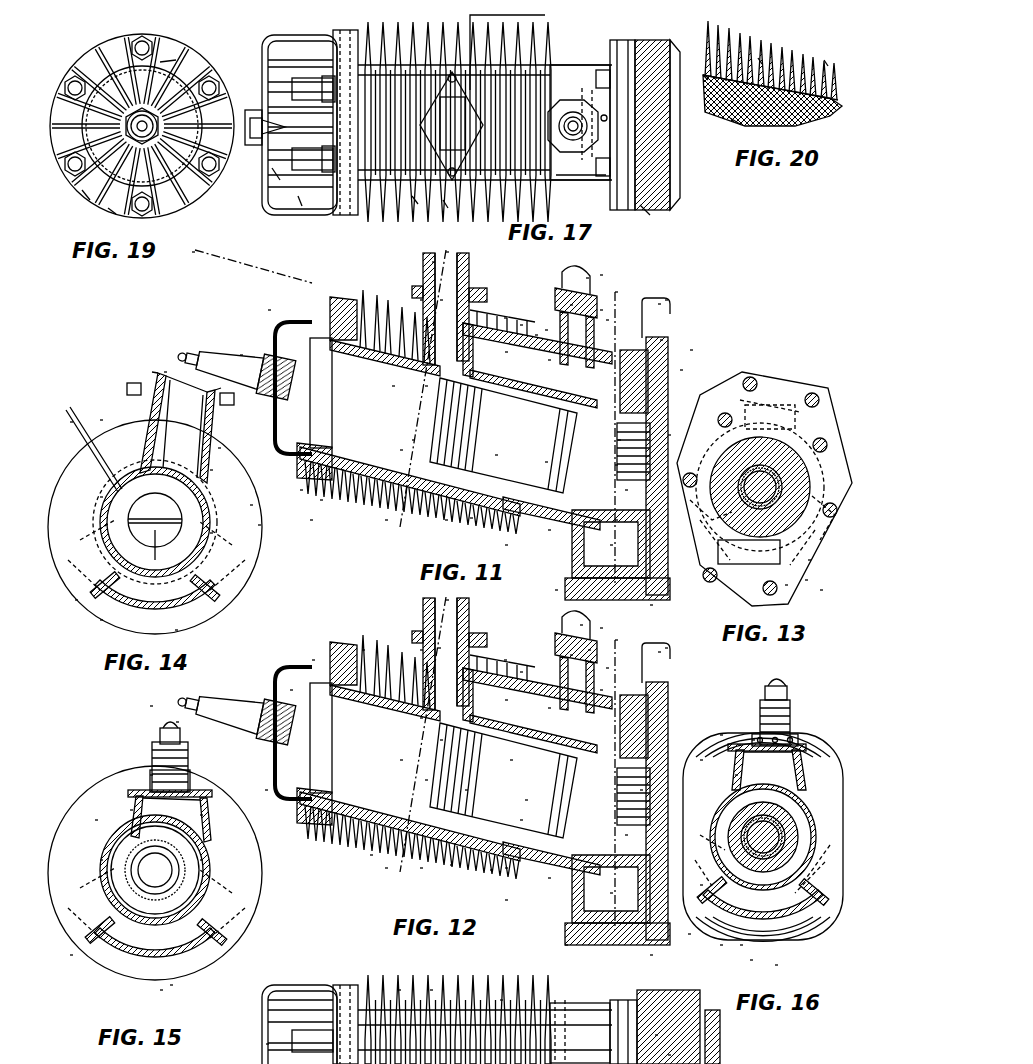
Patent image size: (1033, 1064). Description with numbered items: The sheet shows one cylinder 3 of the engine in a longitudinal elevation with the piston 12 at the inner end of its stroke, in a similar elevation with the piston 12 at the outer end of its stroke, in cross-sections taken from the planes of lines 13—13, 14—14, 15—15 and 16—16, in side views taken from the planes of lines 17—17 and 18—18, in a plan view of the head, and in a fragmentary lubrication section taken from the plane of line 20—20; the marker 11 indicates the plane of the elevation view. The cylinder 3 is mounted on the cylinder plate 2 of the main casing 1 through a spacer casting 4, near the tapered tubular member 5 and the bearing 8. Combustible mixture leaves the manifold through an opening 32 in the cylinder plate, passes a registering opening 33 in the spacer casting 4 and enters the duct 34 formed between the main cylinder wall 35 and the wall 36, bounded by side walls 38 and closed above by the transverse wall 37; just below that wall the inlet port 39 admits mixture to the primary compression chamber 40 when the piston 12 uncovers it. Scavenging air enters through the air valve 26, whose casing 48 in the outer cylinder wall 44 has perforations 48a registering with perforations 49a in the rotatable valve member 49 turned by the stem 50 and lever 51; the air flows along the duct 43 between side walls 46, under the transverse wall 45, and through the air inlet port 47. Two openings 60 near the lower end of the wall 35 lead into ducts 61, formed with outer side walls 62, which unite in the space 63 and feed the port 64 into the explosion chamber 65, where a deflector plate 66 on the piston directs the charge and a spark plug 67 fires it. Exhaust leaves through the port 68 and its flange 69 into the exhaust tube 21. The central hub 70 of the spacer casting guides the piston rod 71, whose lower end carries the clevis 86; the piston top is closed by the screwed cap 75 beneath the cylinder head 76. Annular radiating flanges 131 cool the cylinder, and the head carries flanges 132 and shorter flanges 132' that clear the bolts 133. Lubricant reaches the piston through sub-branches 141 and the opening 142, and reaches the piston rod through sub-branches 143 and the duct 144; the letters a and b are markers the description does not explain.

In FIG. 11, the main casing 1 is at (690, 350).
In FIG. 17, the cylinder plate 2 is at (680, 188).
In FIG. 11, the cylinder plate 2 is at (680, 370).
In FIG. 17, the cylinder 3 is at (380, 224).
In FIG. 20, the cylinder 3 is at (804, 50).
In FIG. 11, the cylinder 3 is at (310, 520).
In FIG. 12, the cylinder 3 is at (362, 650).
In FIG. 13, the cylinder 3 is at (776, 372).
In FIG. 14, the cylinder 3 is at (255, 548).
In FIG. 15, the cylinder 3 is at (246, 886).
In FIG. 16, the cylinder 3 is at (815, 822).
In FIG. 18, the cylinder 3 is at (376, 986).
In FIG. 17, the spacer casting 4 is at (648, 212).
In FIG. 11, the spacer casting 4 is at (666, 300).
In FIG. 12, the spacer casting 4 is at (658, 653).
In FIG. 18, the spacer casting 4 is at (640, 998).
In FIG. 11, the tapered tubular member 5 is at (555, 590).
In FIG. 12, the tapered tubular member 5 is at (565, 945).
In FIG. 11, the bearing 8 is at (650, 605).
In FIG. 12, the bearing 8 is at (656, 962).
In FIG. 14, the section line 11— 11 is at (160, 370).
In FIG. 20, the piston 12 is at (732, 122).
In FIG. 11, the piston 12 is at (286, 497).
In FIG. 12, the piston 12 is at (392, 752).
In FIG. 14, the piston 12 is at (250, 505).
In FIG. 15, the piston 12 is at (176, 722).
In FIG. 11, the section line 13— 13 is at (600, 312).
In FIG. 11, the section line 14— 14 is at (466, 257).
In FIG. 12, the section line 15— 15 is at (496, 660).
In FIG. 12, the section line 16— 16 is at (612, 640).
In FIG. 11, the section line 17— 17 is at (190, 248).
In FIG. 12, the section line 18— 18 is at (690, 920).
In FIG. 15, the section line 18— 18 is at (151, 698).
In FIG. 14, the section line 20— 20 is at (72, 422).
In FIG. 11, the exhaust tube 21 is at (434, 262).
In FIG. 14, the exhaust tube 21 is at (152, 373).
In FIG. 17, the air valve 26 is at (640, 104).
In FIG. 11, the air valve 26 is at (600, 310).
In FIG. 12, the air valve 26 is at (600, 690).
In FIG. 15, the air valve 26 is at (190, 776).
In FIG. 16, the air valve 26 is at (762, 716).
In FIG. 11, the opening 32 is at (615, 520).
In FIG. 12, the opening 32 is at (615, 868).
In FIG. 18, the opening 32 is at (668, 1058).
In FIG. 11, the opening 33 is at (610, 545).
In FIG. 12, the opening 33 is at (610, 893).
In FIG. 18, the opening 33 is at (658, 1040).
In FIG. 11, the duct 34 is at (548, 530).
In FIG. 12, the duct 34 is at (548, 878).
In FIG. 13, the duct 34 is at (745, 565).
In FIG. 15, the duct 34 is at (156, 985).
In FIG. 16, the duct 34 is at (766, 945).
In FIG. 20, the main cylinder wall 35 is at (704, 76).
In FIG. 11, the main cylinder wall 35 is at (320, 500).
In FIG. 12, the main cylinder wall 35 is at (505, 868).
In FIG. 13, the main cylinder wall 35 is at (810, 560).
In FIG. 14, the main cylinder wall 35 is at (258, 525).
In FIG. 15, the main cylinder wall 35 is at (96, 822).
In FIG. 16, the main cylinder wall 35 is at (742, 945).
In FIG. 11, the wall 36 is at (505, 545).
In FIG. 12, the wall 36 is at (505, 900).
In FIG. 13, the wall 36 is at (785, 585).
In FIG. 15, the wall 36 is at (172, 985).
In FIG. 16, the wall 36 is at (752, 960).
In FIG. 11, the transverse wall 37 is at (445, 520).
In FIG. 12, the transverse wall 37 is at (420, 868).
In FIG. 14, the transverse wall 37 is at (176, 630).
In FIG. 18, the transverse wall 37 is at (432, 990).
In FIG. 13, the side walls 38 is at (805, 580).
In FIG. 14, the side walls 38 is at (78, 600).
In FIG. 15, the side walls 38 is at (72, 955).
In FIG. 16, the side walls 38 is at (722, 946).
In FIG. 18, the side walls 38 is at (566, 1002).
In FIG. 11, the combustible mixture inlet port 39 is at (470, 518).
In FIG. 12, the combustible mixture inlet port 39 is at (450, 865).
In FIG. 15, the combustible mixture inlet port 39 is at (162, 992).
In FIG. 18, the combustible mixture inlet port 39 is at (500, 1000).
In FIG. 11, the primary compression chamber 40 is at (618, 440).
In FIG. 12, the primary compression chamber 40 is at (490, 870).
In FIG. 15, the primary compression chamber 40 is at (250, 905).
In FIG. 16, the primary compression chamber 40 is at (722, 806).
In FIG. 17, the duct 43 is at (580, 195).
In FIG. 11, the duct 43 is at (548, 360).
In FIG. 12, the duct 43 is at (548, 708).
In FIG. 13, the duct 43 is at (758, 410).
In FIG. 14, the duct 43 is at (210, 470).
In FIG. 15, the duct 43 is at (200, 815).
In FIG. 16, the duct 43 is at (740, 758).
In FIG. 17, the outer cylinder wall 44 is at (583, 96).
In FIG. 11, the outer cylinder wall 44 is at (520, 325).
In FIG. 12, the outer cylinder wall 44 is at (520, 672).
In FIG. 13, the outer cylinder wall 44 is at (790, 412).
In FIG. 14, the outer cylinder wall 44 is at (218, 448).
In FIG. 15, the outer cylinder wall 44 is at (128, 794).
In FIG. 16, the outer cylinder wall 44 is at (806, 748).
In FIG. 17, the transverse wall 45 is at (416, 200).
In FIG. 14, the transverse wall 45 is at (210, 488).
In FIG. 17, the side walls 46 is at (598, 70).
In FIG. 13, the side walls 46 is at (735, 402).
In FIG. 15, the side walls 46 is at (130, 810).
In FIG. 16, the side walls 46 is at (736, 776).
In FIG. 17, the air inlet port 47 is at (446, 206).
In FIG. 11, the air inlet port 47 is at (505, 352).
In FIG. 12, the air inlet port 47 is at (505, 700).
In FIG. 15, the air inlet port 47 is at (200, 860).
In FIG. 16, the air inlet port 47 is at (700, 760).
In FIG. 17, the casing 48 is at (595, 80).
In FIG. 11, the casing 48 is at (570, 305).
In FIG. 12, the casing 48 is at (570, 655).
In FIG. 15, the casing 48 is at (152, 762).
In FIG. 16, the casing 48 is at (790, 716).
In FIG. 11, the perforations 48a is at (535, 335).
In FIG. 15, the perforations 48a is at (150, 776).
In FIG. 16, the perforations 48a is at (752, 742).
In FIG. 11, the cylindrical valve member 49 is at (545, 330).
In FIG. 12, the cylindrical valve member 49 is at (588, 650).
In FIG. 11, the perforations 49a is at (606, 320).
In FIG. 12, the perforations 49a is at (606, 668).
In FIG. 17, the stem 50 is at (600, 124).
In FIG. 11, the stem 50 is at (587, 278).
In FIG. 12, the stem 50 is at (580, 625).
In FIG. 15, the stem 50 is at (182, 738).
In FIG. 16, the stem 50 is at (788, 690).
In FIG. 17, the lever 51 is at (606, 124).
In FIG. 11, the lever 51 is at (600, 276).
In FIG. 12, the lever 51 is at (600, 628).
In FIG. 15, the lever 51 is at (160, 736).
In FIG. 16, the lever 51 is at (784, 682).
In FIG. 11, the openings 60 is at (625, 490).
In FIG. 12, the openings 60 is at (625, 835).
In FIG. 13, the openings 60 is at (718, 495).
In FIG. 15, the openings 60 is at (100, 860).
In FIG. 16, the openings 60 is at (712, 832).
In FIG. 18, the openings 60 is at (622, 1000).
In FIG. 11, the ducts 61 is at (545, 462).
In FIG. 12, the ducts 61 is at (465, 790).
In FIG. 13, the ducts 61 is at (820, 590).
In FIG. 14, the ducts 61 is at (70, 552).
In FIG. 15, the ducts 61 is at (80, 912).
In FIG. 16, the ducts 61 is at (700, 886).
In FIG. 18, the ducts 61 is at (553, 1000).
In FIG. 11, the outer side walls 62 is at (495, 455).
In FIG. 12, the outer side walls 62 is at (425, 780).
In FIG. 13, the outer side walls 62 is at (812, 545).
In FIG. 14, the outer side walls 62 is at (80, 528).
In FIG. 15, the outer side walls 62 is at (80, 888).
In FIG. 16, the outer side walls 62 is at (700, 852).
In FIG. 18, the outer side walls 62 is at (595, 1003).
In FIG. 11, the space 63 is at (385, 520).
In FIG. 12, the space 63 is at (385, 868).
In FIG. 14, the space 63 is at (102, 622).
In FIG. 18, the space 63 is at (400, 990).
In FIG. 11, the port 64 is at (400, 450).
In FIG. 12, the port 64 is at (370, 855).
In FIG. 14, the port 64 is at (110, 592).
In FIG. 11, the explosion chamber 65 is at (392, 386).
In FIG. 12, the explosion chamber 65 is at (312, 660).
In FIG. 14, the explosion chamber 65 is at (100, 497).
In FIG. 11, the deflector plate 66 is at (412, 440).
In FIG. 12, the deflector plate 66 is at (265, 790).
In FIG. 14, the deflector plate 66 is at (210, 533).
In FIG. 19, the spark plug 67 is at (132, 110).
In FIG. 17, the spark plug 67 is at (252, 110).
In FIG. 11, the spark plug 67 is at (240, 355).
In FIG. 17, the exhaust port 68 is at (451, 126).
In FIG. 11, the exhaust port 68 is at (420, 300).
In FIG. 12, the exhaust port 68 is at (420, 650).
In FIG. 14, the exhaust port 68 is at (118, 440).
In FIG. 17, the flange 69 is at (420, 128).
In FIG. 11, the flange 69 is at (440, 300).
In FIG. 12, the flange 69 is at (438, 648).
In FIG. 14, the flange 69 is at (127, 388).
In FIG. 11, the central hub 70 is at (615, 465).
In FIG. 12, the central hub 70 is at (510, 760).
In FIG. 13, the central hub 70 is at (810, 478).
In FIG. 16, the central hub 70 is at (800, 837).
In FIG. 11, the piston rod 71 is at (668, 435).
In FIG. 12, the piston rod 71 is at (440, 740).
In FIG. 13, the piston rod 71 is at (740, 468).
In FIG. 15, the piston rod 71 is at (186, 870).
In FIG. 16, the piston rod 71 is at (763, 837).
In FIG. 11, the screwed cap 75 is at (425, 386).
In FIG. 12, the screwed cap 75 is at (290, 690).
In FIG. 14, the screwed cap 75 is at (150, 508).
In FIG. 19, the cylinder head 76 is at (176, 60).
In FIG. 17, the cylinder head 76 is at (315, 78).
In FIG. 11, the cylinder head 76 is at (300, 322).
In FIG. 12, the cylinder head 76 is at (300, 667).
In FIG. 18, the cylinder head 76 is at (312, 1000).
In FIG. 12, the clevis 86 is at (640, 790).
In FIG. 17, the annular radiating flanges 131 is at (342, 215).
In FIG. 20, the annular radiating flanges 131 is at (826, 62).
In FIG. 16, the annular radiating flanges 131 is at (776, 965).
In FIG. 19, the radiating flanges 132 is at (146, 132).
In FIG. 17, the radiating flanges 132 is at (258, 206).
In FIG. 11, the radiating flanges 132 is at (248, 297).
In FIG. 18, the radiating flanges 132 is at (292, 1024).
In FIG. 19, the radiating flanges 132' is at (100, 223).
In FIG. 18, the radiating flanges 132' is at (247, 1047).
In FIG. 19, the cap screws 133 is at (85, 200).
In FIG. 17, the cap screws 133 is at (300, 200).
In FIG. 17, the sub-branches 141 is at (546, 16).
In FIG. 20, the sub-branches 141 is at (761, 60).
In FIG. 11, the sub-branches 141 is at (505, 318).
In FIG. 12, the sub-branches 141 is at (504, 660).
In FIG. 14, the sub-branches 141 is at (68, 410).
In FIG. 20, the opening 142 is at (772, 100).
In FIG. 12, the opening 142 is at (420, 718).
In FIG. 11, the sub-branches 143 is at (665, 300).
In FIG. 12, the sub-branches 143 is at (665, 648).
In FIG. 11, the duct 144 is at (666, 334).
In FIG. 16, the duct 144 is at (722, 736).
In FIG. 12, the arrow a is at (525, 800).
In FIG. 12, the arrow b is at (520, 820).